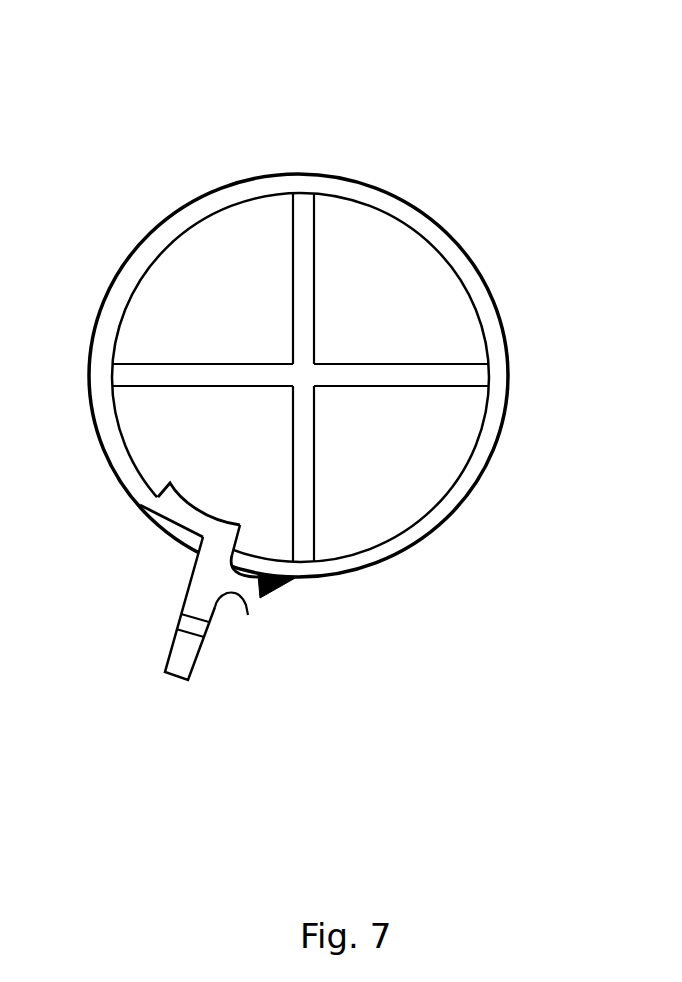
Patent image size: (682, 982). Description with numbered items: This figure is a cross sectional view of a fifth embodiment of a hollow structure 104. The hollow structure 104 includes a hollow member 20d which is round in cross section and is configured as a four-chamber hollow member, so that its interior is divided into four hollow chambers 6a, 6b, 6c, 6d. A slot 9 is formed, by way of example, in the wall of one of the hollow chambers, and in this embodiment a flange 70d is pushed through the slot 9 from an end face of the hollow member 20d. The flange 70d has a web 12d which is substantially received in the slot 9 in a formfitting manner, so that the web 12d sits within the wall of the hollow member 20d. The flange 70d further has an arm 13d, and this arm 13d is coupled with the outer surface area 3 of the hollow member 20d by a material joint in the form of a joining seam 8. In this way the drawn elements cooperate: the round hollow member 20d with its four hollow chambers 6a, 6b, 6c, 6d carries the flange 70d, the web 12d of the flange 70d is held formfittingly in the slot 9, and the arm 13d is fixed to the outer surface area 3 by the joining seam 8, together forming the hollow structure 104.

The hollow structure 104 is at (80, 127).
The hollow member 20d is at (451, 248).
The outer surface area 3 is at (443, 523).
The hollow chamber 6a is at (222, 333).
The hollow chamber 6b is at (403, 334).
The hollow chamber 6c is at (231, 485).
The hollow chamber 6d is at (405, 485).
The slot 9 is at (207, 545).
The web 12d is at (212, 582).
The flange 70d is at (188, 602).
The joining seam 8 is at (280, 593).
The arm 13d is at (240, 583).